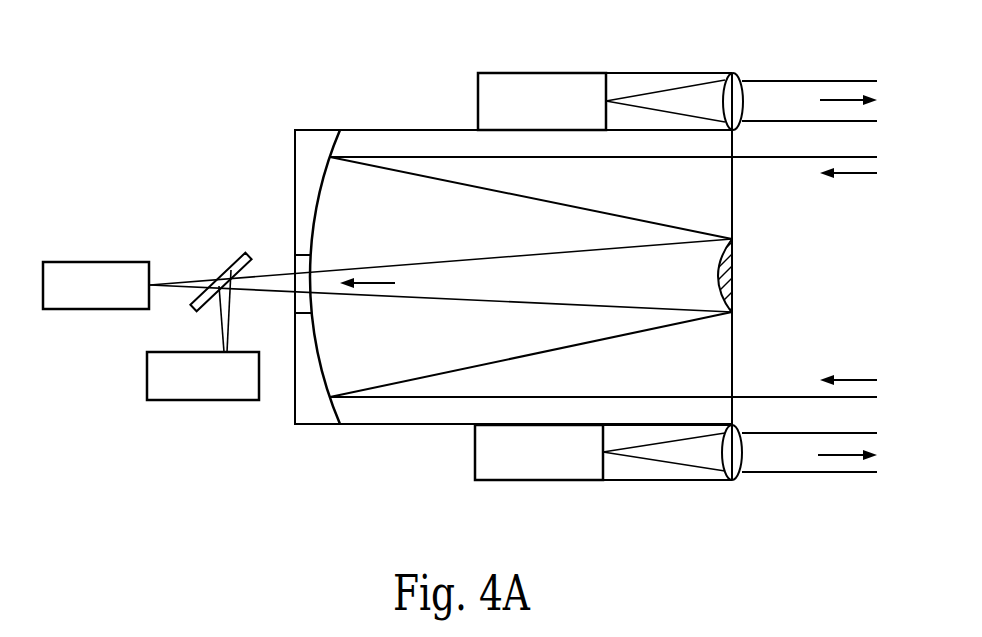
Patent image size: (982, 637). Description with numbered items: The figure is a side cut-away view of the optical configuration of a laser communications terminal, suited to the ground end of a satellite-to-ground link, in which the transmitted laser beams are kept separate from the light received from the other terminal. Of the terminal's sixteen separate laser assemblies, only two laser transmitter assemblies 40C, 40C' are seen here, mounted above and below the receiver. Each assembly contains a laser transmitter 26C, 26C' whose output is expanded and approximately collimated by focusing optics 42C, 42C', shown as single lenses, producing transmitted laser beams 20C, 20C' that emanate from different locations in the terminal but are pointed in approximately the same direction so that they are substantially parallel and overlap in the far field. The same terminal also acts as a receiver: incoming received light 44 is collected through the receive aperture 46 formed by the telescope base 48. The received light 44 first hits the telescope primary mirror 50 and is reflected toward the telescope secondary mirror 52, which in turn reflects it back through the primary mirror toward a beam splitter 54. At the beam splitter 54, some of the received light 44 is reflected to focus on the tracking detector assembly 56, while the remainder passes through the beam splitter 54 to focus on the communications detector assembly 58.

The transmitted laser beam 20C is at (809, 65).
The transmitted laser beam 20C' is at (809, 487).
The laser transmitter 26C is at (542, 69).
The laser transmitter 26C' is at (539, 483).
The laser transmitter assembly 40C is at (669, 69).
The laser transmitter assembly 40C' is at (667, 483).
The focusing optics 42C is at (743, 69).
The focusing optics 42C' is at (743, 483).
The received light 44 is at (375, 283).
The receive aperture 46 is at (735, 365).
The telescope base 48 is at (378, 425).
The telescope primary mirror 50 is at (318, 360).
The telescope secondary mirror 52 is at (722, 280).
The beam splitter 54 is at (228, 262).
The tracking detector assembly 56 is at (147, 371).
The communications detector assembly 58 is at (97, 262).